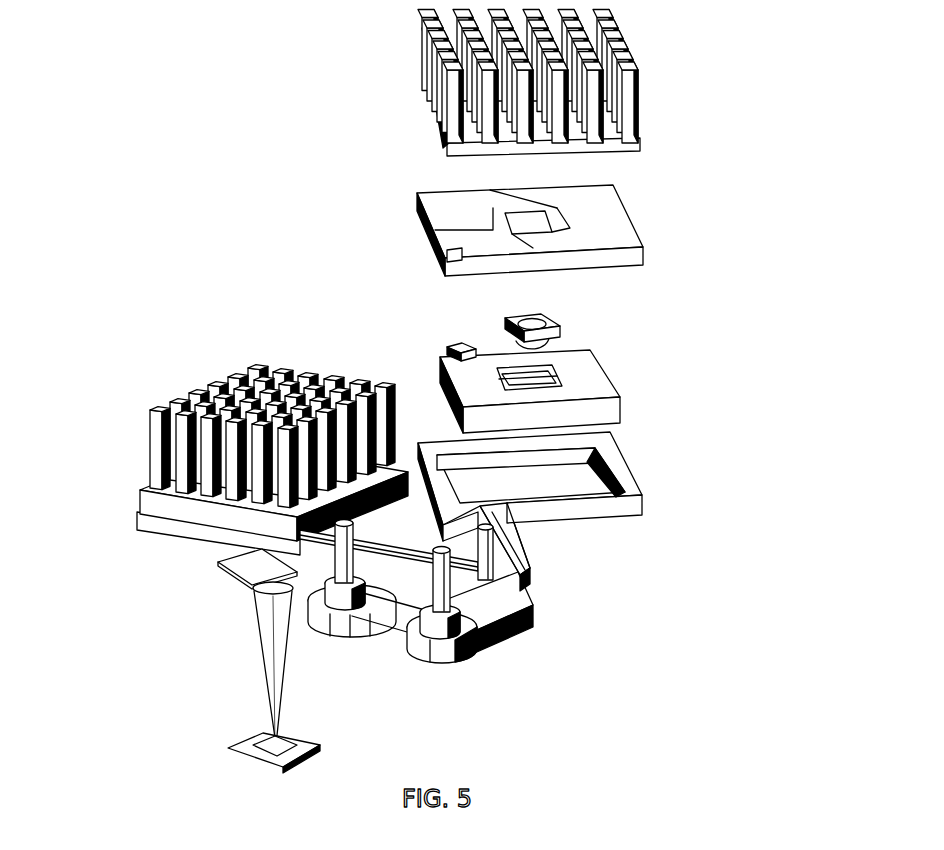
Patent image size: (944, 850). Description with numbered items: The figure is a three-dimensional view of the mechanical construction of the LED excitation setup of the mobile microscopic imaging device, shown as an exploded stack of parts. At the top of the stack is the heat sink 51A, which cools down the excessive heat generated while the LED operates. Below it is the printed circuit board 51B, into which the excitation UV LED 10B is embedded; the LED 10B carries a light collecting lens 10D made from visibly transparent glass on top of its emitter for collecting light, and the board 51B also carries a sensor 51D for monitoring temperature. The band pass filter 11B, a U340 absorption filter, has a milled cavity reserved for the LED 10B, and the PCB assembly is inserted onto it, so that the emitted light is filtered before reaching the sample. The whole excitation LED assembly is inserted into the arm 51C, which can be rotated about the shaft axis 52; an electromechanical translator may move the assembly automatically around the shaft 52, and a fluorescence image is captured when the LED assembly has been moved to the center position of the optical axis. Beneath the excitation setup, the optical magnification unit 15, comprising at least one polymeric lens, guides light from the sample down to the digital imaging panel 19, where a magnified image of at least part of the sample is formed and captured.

The heat sink 51A is at (632, 100).
The printed circuit board 51B is at (620, 240).
The excitation LED 10B is at (560, 310).
The light collecting lens 10D is at (548, 338).
The band pass filter 11B is at (612, 382).
The arm 51C is at (632, 490).
The sensor 51D is at (440, 340).
The shaft axis 52 is at (545, 555).
The optical magnification unit 15 is at (240, 586).
The digital imaging panel 19 is at (240, 737).